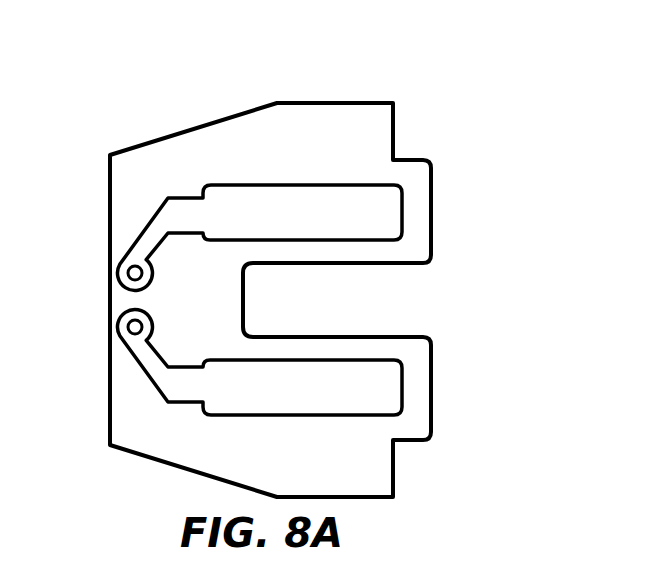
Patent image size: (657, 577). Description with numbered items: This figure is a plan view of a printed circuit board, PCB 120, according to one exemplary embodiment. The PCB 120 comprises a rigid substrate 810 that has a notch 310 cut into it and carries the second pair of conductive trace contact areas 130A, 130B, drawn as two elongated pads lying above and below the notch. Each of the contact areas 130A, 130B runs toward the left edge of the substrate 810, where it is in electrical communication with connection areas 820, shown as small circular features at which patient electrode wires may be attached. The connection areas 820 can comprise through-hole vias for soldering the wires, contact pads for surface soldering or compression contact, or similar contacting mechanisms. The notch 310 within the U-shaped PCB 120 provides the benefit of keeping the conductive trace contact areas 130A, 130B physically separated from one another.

The PCB 120 is at (187, 103).
The rigid substrate 810 is at (332, 152).
The notch 310 is at (428, 298).
The conductive trace contact area 130A is at (373, 221).
The conductive trace contact area 130B is at (368, 392).
The connection areas 820 is at (120, 315).